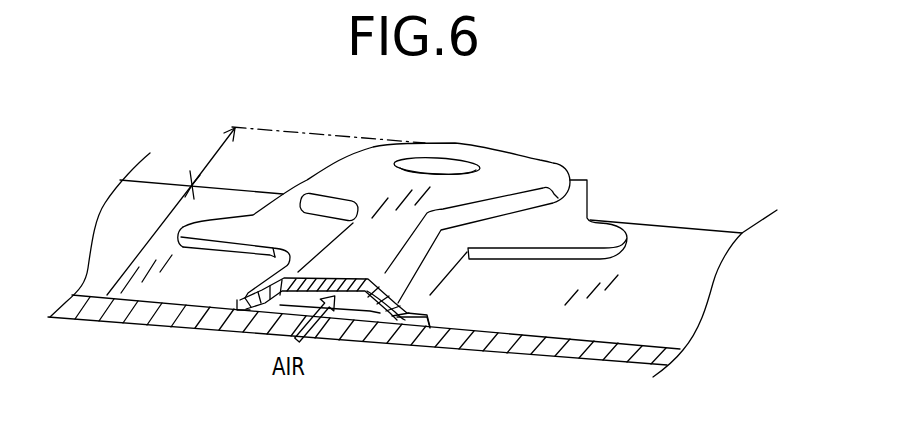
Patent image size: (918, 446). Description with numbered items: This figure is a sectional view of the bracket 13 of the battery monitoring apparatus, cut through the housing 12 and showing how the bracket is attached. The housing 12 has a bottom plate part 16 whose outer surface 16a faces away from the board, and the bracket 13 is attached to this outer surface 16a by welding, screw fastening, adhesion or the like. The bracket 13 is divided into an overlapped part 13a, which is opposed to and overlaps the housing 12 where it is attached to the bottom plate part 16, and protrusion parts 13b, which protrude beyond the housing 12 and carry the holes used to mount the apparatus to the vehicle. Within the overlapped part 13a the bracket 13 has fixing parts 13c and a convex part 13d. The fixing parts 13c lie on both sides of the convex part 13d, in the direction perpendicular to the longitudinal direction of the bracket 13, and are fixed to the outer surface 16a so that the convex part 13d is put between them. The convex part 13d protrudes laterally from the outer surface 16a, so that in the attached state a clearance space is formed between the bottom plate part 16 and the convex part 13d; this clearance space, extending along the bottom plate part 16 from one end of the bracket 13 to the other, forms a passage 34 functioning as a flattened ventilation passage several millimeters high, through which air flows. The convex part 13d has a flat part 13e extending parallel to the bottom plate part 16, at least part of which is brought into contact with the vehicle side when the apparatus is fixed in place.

The housing 12 is at (720, 233).
The bracket 13 is at (520, 157).
The overlapped part 13a is at (147, 240).
The protrusion parts 13b is at (293, 156).
The fixing parts 13c is at (251, 307).
The convex part 13d is at (387, 252).
The flat part 13e is at (423, 243).
The bottom plate part 16 is at (650, 357).
The outer surface 16a is at (670, 246).
The passage 34 is at (372, 310).